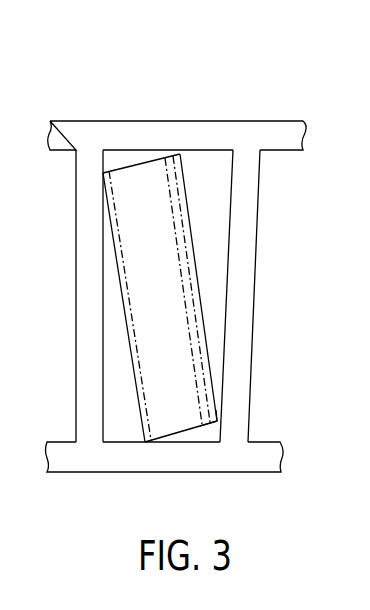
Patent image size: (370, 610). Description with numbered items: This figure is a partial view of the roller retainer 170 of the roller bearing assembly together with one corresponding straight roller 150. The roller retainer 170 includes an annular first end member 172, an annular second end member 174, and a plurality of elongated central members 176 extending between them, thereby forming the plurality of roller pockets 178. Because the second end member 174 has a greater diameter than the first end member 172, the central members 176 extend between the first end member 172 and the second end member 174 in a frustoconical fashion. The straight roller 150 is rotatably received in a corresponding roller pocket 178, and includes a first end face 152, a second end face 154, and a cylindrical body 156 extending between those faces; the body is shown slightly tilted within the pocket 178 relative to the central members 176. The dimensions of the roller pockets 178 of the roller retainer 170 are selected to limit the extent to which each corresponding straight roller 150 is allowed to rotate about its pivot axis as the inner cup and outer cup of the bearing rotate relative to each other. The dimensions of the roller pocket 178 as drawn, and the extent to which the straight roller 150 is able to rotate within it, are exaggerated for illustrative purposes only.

The roller retainer 170 is at (92, 80).
The second end member 174 is at (200, 132).
The first end member 172 is at (125, 458).
The central members 176 is at (238, 360).
The roller pocket 178 is at (227, 247).
The straight roller 150 is at (116, 313).
The second end face 154 is at (142, 163).
The side edge of insert 156 is at (113, 257).
The first end face 152 is at (205, 428).